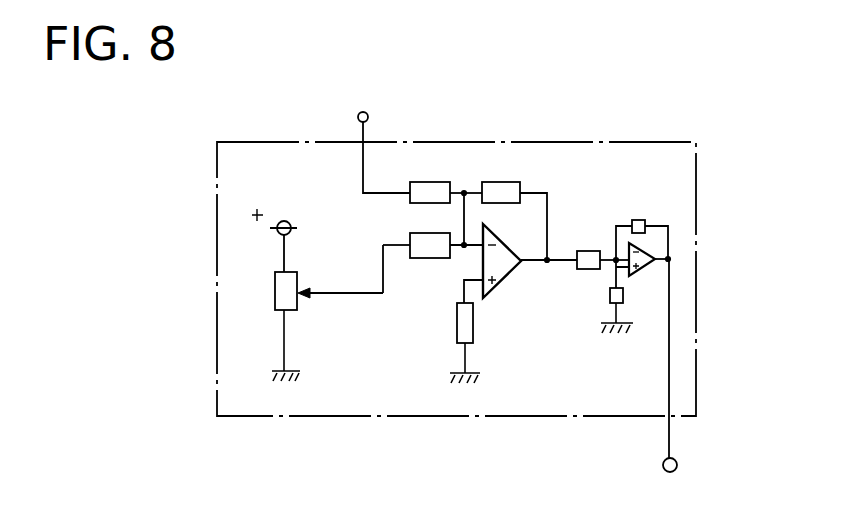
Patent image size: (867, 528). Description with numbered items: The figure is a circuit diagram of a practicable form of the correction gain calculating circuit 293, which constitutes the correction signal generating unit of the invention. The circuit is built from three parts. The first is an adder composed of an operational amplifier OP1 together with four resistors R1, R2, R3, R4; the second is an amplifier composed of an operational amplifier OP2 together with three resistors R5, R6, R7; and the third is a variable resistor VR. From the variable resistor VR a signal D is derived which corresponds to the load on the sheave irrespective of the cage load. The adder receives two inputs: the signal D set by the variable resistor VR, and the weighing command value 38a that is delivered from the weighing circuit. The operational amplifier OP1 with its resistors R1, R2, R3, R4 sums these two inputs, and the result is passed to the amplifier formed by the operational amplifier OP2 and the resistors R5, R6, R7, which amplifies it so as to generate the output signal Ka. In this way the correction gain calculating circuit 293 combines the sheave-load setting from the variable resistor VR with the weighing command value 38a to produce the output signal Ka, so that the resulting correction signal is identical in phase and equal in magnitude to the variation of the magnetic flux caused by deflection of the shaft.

The correction gain calculating circuit 293 is at (245, 142).
The weighing command value 38a is at (377, 137).
The resistor R1 is at (446, 180).
The resistor R2 is at (433, 261).
The resistor R3 is at (514, 209).
The resistor R4 is at (455, 331).
The resistor R5 is at (603, 248).
The resistor R6 is at (642, 228).
The resistor R7 is at (605, 296).
The operational amplifier OP1 is at (504, 281).
The operational amplifier OP2 is at (645, 268).
The variable resistor VR is at (298, 296).
The signal D is at (337, 292).
The output signal Ka is at (688, 369).